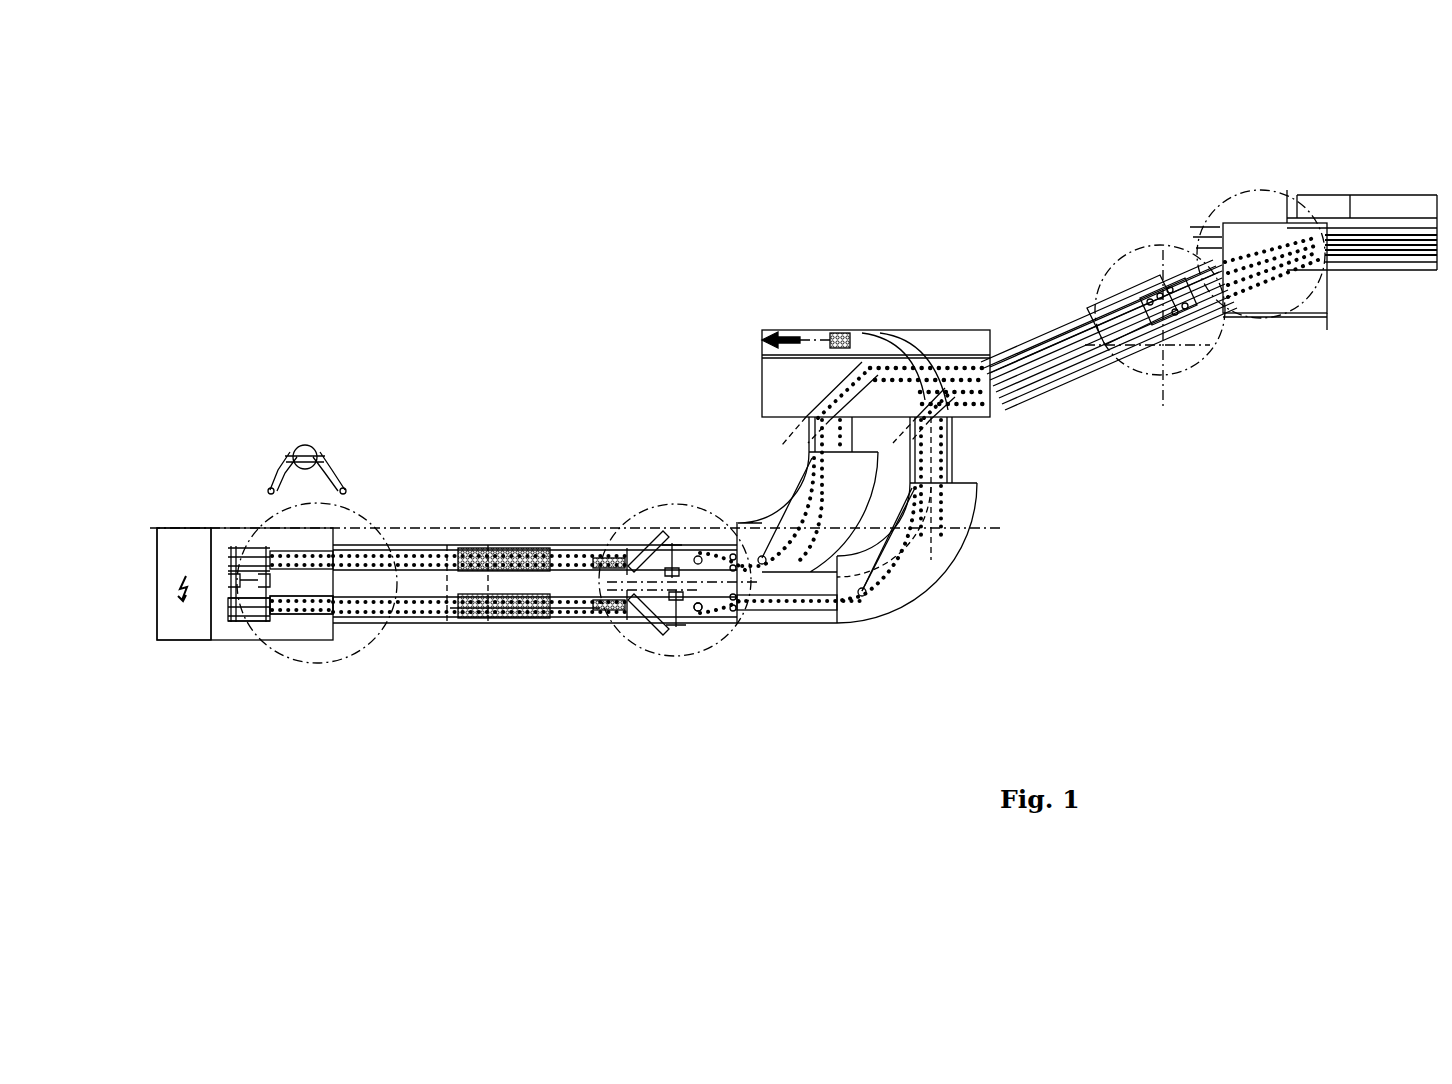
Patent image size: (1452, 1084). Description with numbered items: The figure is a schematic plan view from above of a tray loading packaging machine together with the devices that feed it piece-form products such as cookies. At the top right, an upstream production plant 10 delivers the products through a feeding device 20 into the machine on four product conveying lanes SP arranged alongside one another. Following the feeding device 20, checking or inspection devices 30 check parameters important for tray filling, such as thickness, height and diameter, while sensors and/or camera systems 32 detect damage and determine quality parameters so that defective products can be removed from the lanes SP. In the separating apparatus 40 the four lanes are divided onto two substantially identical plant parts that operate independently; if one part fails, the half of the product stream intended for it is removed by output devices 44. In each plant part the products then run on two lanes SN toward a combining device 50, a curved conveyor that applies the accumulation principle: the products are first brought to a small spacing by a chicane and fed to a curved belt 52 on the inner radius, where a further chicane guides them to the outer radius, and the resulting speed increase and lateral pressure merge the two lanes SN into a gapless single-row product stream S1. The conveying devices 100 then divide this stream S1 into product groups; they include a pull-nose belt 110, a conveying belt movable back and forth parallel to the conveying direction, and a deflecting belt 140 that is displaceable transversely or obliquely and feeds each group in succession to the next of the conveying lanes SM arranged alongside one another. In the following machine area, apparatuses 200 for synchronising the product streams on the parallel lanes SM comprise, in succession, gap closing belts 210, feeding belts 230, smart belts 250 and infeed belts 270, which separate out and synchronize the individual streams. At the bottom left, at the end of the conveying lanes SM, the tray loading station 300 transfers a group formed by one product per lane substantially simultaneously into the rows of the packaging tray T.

The production plant 10 is at (1383, 262).
The feeding device 20 is at (1285, 237).
The checking or inspection devices 30 is at (1143, 290).
The sensors and/or camera systems 32 is at (1180, 318).
The separating apparatus 40 is at (946, 363).
The output devices 44 is at (763, 342).
The combining device 50 is at (912, 573).
The curved belt 52 is at (885, 582).
The conveying devices 100 is at (665, 652).
The pull-nose belt 110 is at (717, 608).
The deflecting belt 140 is at (655, 540).
The apparatuses for synchronising the product streams 200 is at (428, 636).
The gap closing belts 210 is at (584, 553).
The feeding belts 230 is at (432, 552).
The smart belts 250 is at (350, 612).
The infeed belts 270 is at (293, 612).
The tray loading station 300 is at (275, 648).
The packaging tray T is at (252, 558).
The conveying lanes SM is at (567, 608).
The product lanes SN is at (940, 460).
The product conveying lanes SP is at (1055, 352).
The single-row product stream S1 is at (792, 604).